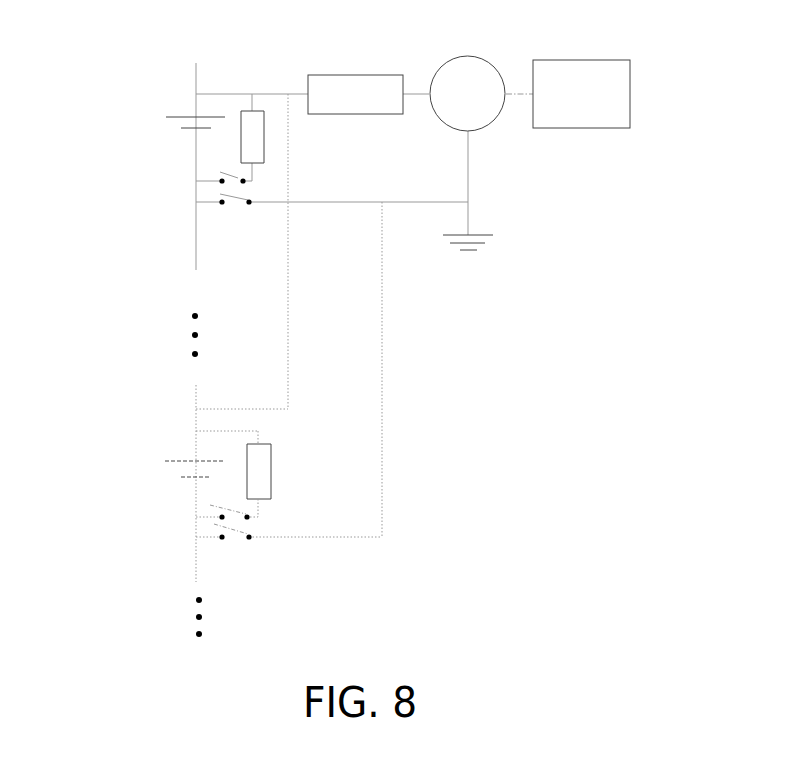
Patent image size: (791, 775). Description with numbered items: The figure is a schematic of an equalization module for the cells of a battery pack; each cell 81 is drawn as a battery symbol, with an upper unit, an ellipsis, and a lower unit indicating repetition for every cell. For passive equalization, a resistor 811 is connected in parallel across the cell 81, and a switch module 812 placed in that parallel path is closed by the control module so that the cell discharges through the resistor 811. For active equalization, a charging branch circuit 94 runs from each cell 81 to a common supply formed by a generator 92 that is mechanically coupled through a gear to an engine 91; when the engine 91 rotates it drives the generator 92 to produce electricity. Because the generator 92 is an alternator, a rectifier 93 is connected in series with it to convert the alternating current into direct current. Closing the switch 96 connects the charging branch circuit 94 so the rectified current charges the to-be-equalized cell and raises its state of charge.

The battery 81 is at (168, 118).
The resistor 811 is at (264, 135).
The switch module 812 is at (212, 173).
The engine 91 is at (597, 128).
The generator 92 is at (437, 71).
The rectifier 93 is at (347, 75).
The charging branch circuit 94 is at (216, 94).
The switch 96 is at (230, 210).